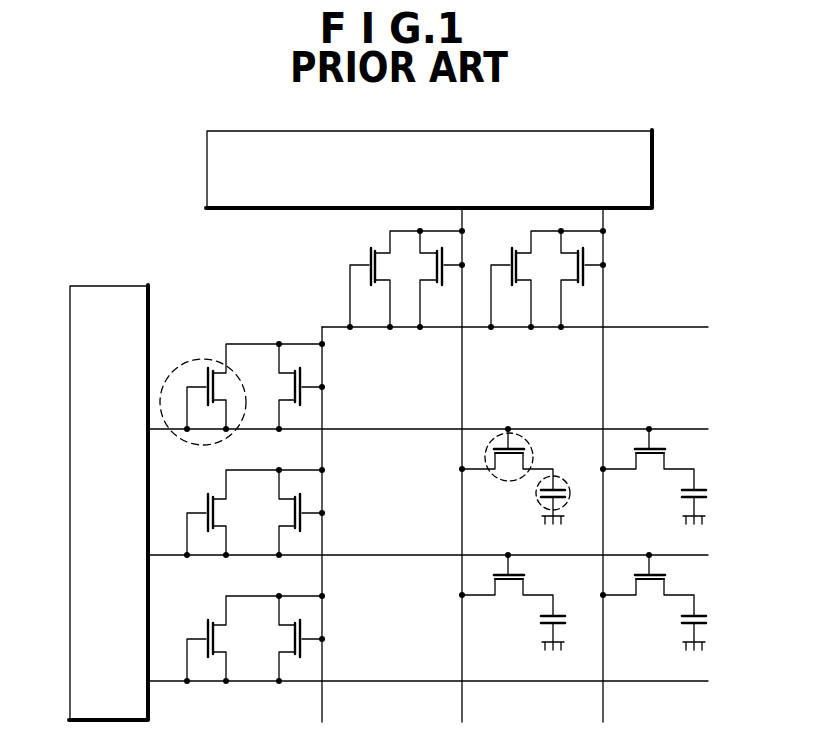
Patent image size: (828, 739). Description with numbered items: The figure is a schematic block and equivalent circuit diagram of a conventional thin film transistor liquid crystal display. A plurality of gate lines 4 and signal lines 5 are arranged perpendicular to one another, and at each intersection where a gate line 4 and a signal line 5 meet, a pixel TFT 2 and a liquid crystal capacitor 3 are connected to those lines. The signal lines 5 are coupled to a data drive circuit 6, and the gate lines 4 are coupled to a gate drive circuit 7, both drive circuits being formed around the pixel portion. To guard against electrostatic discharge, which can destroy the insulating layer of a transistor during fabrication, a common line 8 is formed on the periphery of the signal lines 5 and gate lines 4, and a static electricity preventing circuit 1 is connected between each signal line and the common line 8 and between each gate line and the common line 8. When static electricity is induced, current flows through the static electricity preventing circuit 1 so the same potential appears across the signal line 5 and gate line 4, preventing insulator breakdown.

The static electricity preventing circuit 1 is at (171, 373).
The pixel TFT 2 is at (526, 442).
The liquid crystal capacitor 3 is at (537, 494).
The gate line 4 is at (373, 680).
The signal line 5 is at (459, 632).
The data drive circuit 6 is at (207, 172).
The gate drive circuit 7 is at (104, 290).
The common line 8 is at (635, 326).